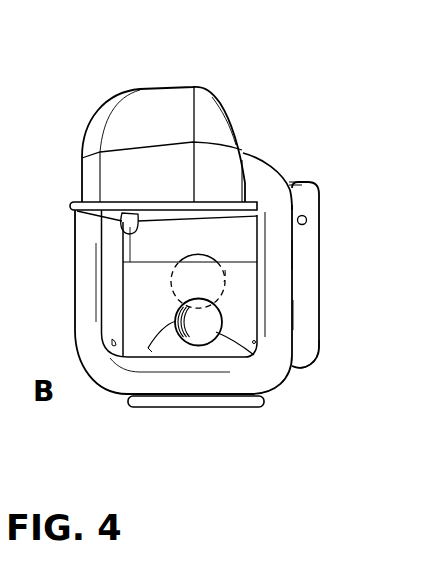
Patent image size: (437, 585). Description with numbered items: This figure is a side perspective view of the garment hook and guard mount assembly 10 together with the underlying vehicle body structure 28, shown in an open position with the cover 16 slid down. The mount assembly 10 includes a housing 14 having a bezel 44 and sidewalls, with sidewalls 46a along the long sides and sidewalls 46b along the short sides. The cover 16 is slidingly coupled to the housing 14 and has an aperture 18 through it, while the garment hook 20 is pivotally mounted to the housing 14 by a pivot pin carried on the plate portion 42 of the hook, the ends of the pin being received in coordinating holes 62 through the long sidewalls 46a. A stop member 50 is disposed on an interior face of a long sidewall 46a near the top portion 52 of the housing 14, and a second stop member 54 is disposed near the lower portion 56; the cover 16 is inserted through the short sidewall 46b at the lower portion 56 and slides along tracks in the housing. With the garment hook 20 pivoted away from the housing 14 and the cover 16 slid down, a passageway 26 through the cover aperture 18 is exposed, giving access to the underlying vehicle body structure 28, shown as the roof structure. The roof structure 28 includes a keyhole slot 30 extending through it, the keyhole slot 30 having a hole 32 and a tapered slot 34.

The garment hook and guard mount assembly 10 is at (245, 28).
The housing 14 is at (297, 256).
The cover 16 is at (120, 278).
The aperture 18 is at (150, 348).
The garment hook 20 is at (104, 100).
The passageway 26 is at (190, 334).
The underlying vehicle body structure 28 is at (240, 243).
The keyhole slot 30 is at (235, 298).
The hole 32 is at (228, 273).
The tapered slot 34 is at (302, 372).
The plate portion 42 is at (313, 184).
The bezel 44 is at (277, 324).
The sidewalls 46a is at (322, 322).
The sidewalls 46b is at (300, 181).
The stop member 50 is at (120, 222).
The top portion 52 is at (256, 152).
The second stop member 54 is at (110, 338).
The lower portion 56 is at (177, 400).
The holes 62 is at (307, 218).